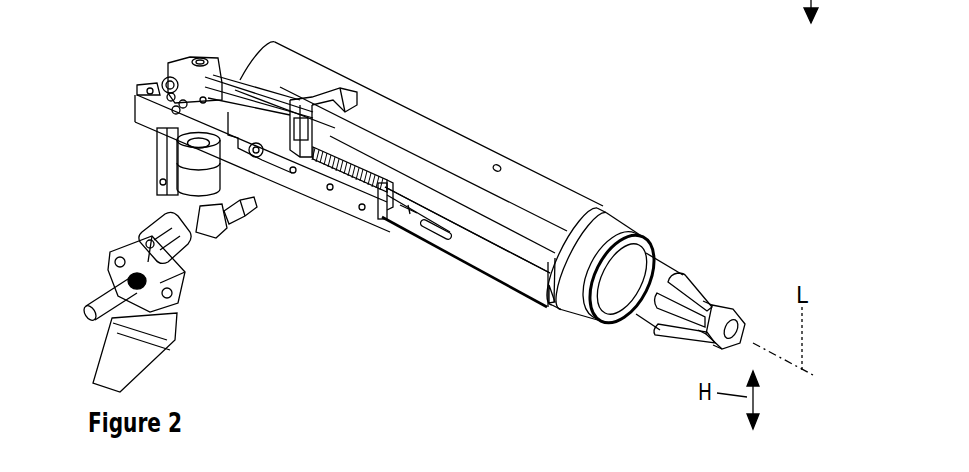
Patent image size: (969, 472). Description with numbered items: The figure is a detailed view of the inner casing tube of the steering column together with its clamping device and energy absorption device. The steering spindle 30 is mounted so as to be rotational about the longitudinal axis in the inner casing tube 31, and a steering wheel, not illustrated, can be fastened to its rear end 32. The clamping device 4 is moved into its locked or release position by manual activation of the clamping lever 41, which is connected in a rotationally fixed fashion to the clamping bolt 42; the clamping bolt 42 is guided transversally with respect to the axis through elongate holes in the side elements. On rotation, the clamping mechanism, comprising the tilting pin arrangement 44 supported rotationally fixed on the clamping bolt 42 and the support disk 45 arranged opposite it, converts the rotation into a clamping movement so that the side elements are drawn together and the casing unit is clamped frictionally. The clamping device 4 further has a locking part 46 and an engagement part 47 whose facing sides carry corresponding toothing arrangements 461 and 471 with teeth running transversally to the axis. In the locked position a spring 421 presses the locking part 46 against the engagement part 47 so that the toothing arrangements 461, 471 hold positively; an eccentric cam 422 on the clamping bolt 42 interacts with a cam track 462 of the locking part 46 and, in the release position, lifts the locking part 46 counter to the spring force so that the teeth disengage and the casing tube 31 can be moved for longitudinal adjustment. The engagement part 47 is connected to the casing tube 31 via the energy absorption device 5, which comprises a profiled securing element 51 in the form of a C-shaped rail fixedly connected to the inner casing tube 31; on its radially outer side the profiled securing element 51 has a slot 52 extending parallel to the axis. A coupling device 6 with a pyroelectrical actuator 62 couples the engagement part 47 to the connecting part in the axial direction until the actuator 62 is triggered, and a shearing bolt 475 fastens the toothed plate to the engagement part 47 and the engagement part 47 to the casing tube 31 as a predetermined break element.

The clamping device 4 is at (202, 332).
The energy absorption device 5 is at (478, 290).
The coupling device 6 is at (138, 157).
The steering spindle 30 is at (660, 270).
The inner casing tube 31 is at (570, 203).
The rear end 32 is at (725, 308).
The clamping lever 41 is at (133, 360).
The clamping bolt 42 is at (120, 295).
The tilting pin arrangement 44 is at (142, 242).
The support disk 45 is at (190, 276).
The locking part 46 is at (317, 147).
The engagement part 47 is at (307, 188).
The profiled securing element 51 is at (493, 263).
The slot 52 is at (433, 230).
The pyroelectrical actuator 62 is at (188, 193).
The spring 421 is at (253, 87).
The eccentric cam 422 is at (223, 228).
The toothing arrangement 461 is at (295, 128).
The cam track 462 is at (342, 92).
The toothing arrangement 471 is at (351, 182).
The shearing bolt 475 is at (263, 128).